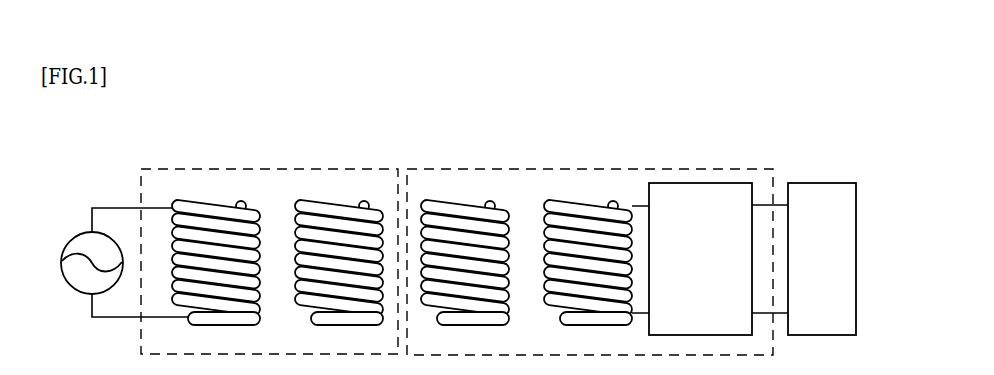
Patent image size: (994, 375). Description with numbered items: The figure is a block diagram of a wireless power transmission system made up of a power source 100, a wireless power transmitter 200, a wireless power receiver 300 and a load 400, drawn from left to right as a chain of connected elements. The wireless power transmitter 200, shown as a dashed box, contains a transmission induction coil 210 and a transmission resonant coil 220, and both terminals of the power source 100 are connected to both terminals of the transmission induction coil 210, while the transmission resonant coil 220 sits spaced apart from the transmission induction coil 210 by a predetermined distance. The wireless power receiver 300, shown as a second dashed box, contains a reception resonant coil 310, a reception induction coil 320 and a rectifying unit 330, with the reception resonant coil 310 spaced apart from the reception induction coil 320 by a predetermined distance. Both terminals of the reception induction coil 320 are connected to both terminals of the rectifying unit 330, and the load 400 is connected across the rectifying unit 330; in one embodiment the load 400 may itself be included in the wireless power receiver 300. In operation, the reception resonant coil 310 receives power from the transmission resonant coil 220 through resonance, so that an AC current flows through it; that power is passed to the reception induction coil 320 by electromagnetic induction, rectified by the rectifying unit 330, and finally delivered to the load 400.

The power source 100 is at (70, 233).
The wireless power transmitter 200 is at (163, 167).
The transmission induction coil 210 is at (228, 216).
The transmission resonant coil 220 is at (340, 210).
The wireless power receiver 300 is at (512, 164).
The reception resonant coil 310 is at (458, 210).
The reception induction coil 320 is at (597, 212).
The rectifying unit 330 is at (692, 183).
The load 400 is at (822, 183).